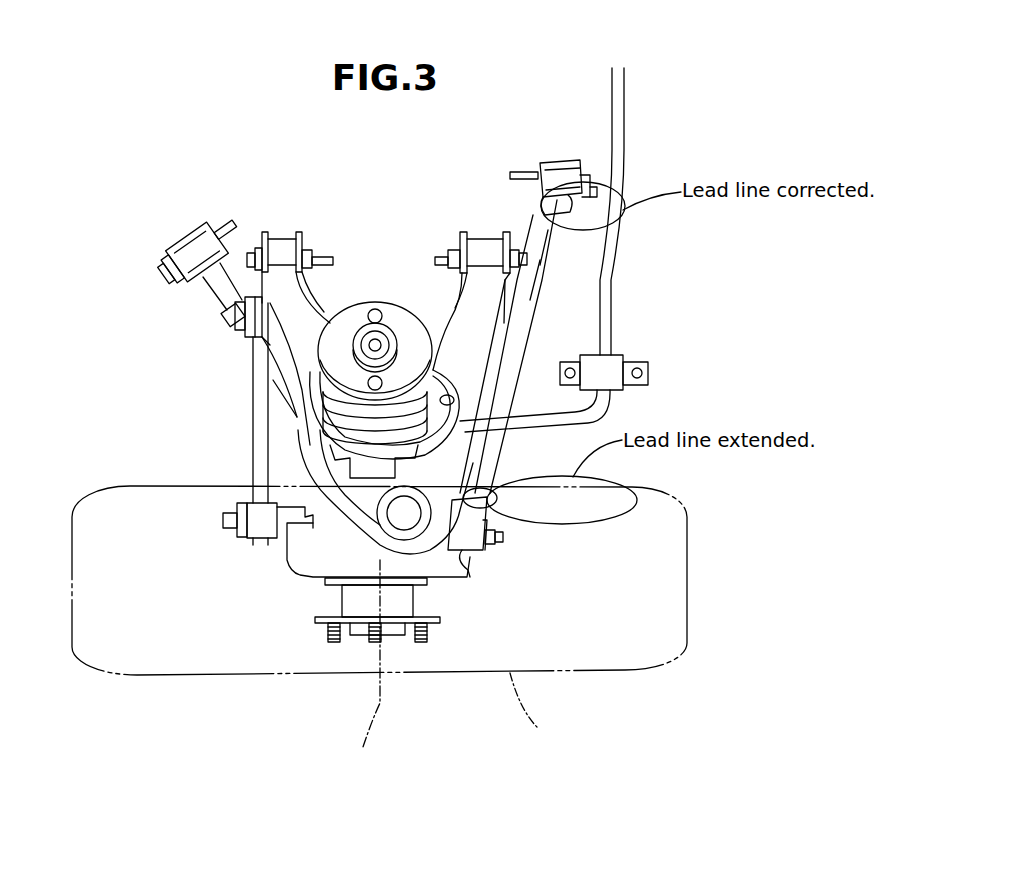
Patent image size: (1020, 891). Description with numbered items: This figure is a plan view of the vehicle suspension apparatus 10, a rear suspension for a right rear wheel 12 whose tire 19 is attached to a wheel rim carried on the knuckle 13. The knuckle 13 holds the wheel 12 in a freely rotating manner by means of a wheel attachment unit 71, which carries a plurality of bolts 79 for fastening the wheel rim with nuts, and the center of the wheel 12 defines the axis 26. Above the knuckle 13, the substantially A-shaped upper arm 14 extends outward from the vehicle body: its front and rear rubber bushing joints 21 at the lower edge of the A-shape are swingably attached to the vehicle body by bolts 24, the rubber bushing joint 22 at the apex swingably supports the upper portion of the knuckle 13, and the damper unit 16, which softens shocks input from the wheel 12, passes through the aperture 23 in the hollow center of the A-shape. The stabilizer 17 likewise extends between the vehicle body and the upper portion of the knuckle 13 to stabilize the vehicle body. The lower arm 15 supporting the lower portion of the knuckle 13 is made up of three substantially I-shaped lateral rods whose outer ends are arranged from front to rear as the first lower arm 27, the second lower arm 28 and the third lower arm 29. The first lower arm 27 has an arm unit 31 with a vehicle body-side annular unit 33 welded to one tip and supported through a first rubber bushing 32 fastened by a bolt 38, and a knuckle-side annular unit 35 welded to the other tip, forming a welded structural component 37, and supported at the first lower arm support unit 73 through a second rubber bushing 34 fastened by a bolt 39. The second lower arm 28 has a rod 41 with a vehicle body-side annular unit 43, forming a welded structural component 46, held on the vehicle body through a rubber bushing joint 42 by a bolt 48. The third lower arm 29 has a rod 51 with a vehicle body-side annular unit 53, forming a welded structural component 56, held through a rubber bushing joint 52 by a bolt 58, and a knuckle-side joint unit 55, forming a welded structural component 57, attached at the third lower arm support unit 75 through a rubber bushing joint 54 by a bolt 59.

The vehicle suspension apparatus 10 is at (168, 72).
The wheel 12 is at (545, 690).
The knuckle 13 is at (303, 590).
The upper arm 14 is at (517, 292).
The lower arm 15 is at (160, 385).
The damper unit 16 is at (470, 348).
The stabilizer 17 is at (630, 135).
The tire 19 is at (531, 715).
The rubber bushing joint 21 is at (282, 232).
The rubber bushing joint 22 is at (407, 510).
The aperture 23 is at (490, 392).
The bolt 24 is at (320, 258).
The axis 26 is at (377, 669).
The first lower arm 27 is at (242, 412).
The second lower arm 28 is at (222, 312).
The third lower arm 29 is at (582, 240).
The arm unit 31 is at (255, 445).
The first rubber bushing 32 is at (248, 330).
The vehicle body-side annular unit 33 is at (250, 340).
The second rubber bushing 34 is at (243, 542).
The knuckle-side annular unit 35 is at (260, 542).
The welded structural component 37 is at (260, 493).
The bolt 38 is at (232, 325).
The bolt 39 is at (230, 520).
The rod 41 is at (258, 345).
The rubber bushing joint 42 is at (172, 262).
The vehicle body-side annular unit 43 is at (198, 237).
The welded structural component 46 is at (208, 293).
The bolt 48 is at (172, 275).
The rod 51 is at (540, 268).
The rubber bushing joint 52 is at (545, 165).
The vehicle body-side annular unit 53 is at (565, 162).
The rubber bushing joint 54 is at (503, 538).
The knuckle-side joint unit 55 is at (490, 517).
The welded structural component 56 is at (555, 212).
The welded structural component 57 is at (480, 497).
The bolt 58 is at (513, 170).
The bolt 59 is at (495, 547).
The wheel attachment unit 71 is at (393, 627).
The first lower arm support unit 73 is at (288, 527).
The third lower arm support unit 75 is at (460, 543).
The bolt 79 is at (333, 647).